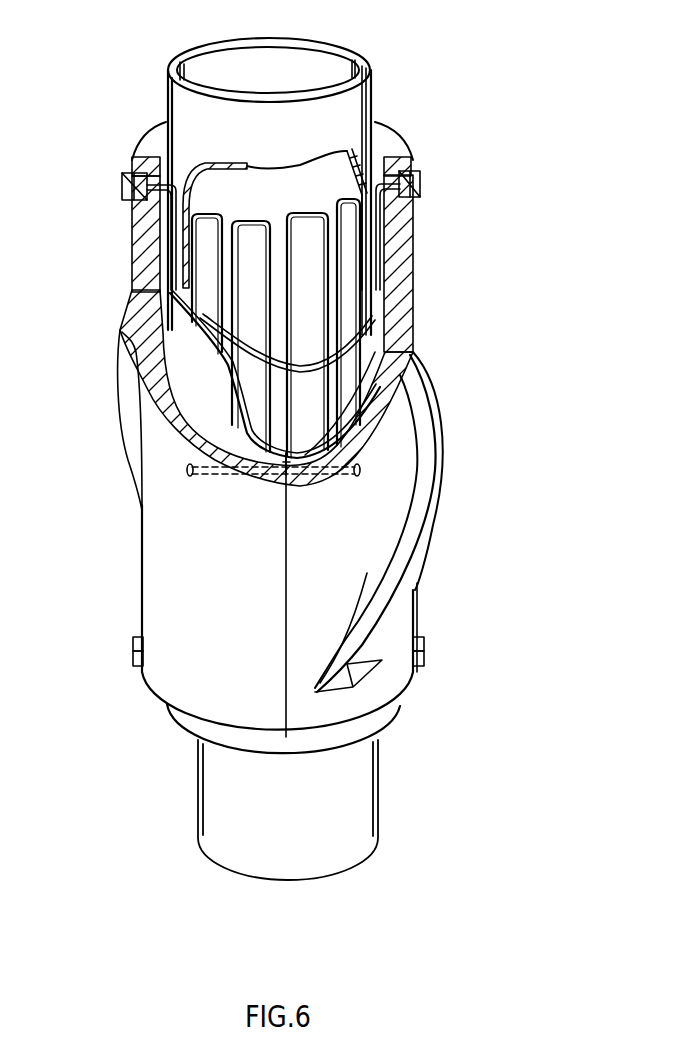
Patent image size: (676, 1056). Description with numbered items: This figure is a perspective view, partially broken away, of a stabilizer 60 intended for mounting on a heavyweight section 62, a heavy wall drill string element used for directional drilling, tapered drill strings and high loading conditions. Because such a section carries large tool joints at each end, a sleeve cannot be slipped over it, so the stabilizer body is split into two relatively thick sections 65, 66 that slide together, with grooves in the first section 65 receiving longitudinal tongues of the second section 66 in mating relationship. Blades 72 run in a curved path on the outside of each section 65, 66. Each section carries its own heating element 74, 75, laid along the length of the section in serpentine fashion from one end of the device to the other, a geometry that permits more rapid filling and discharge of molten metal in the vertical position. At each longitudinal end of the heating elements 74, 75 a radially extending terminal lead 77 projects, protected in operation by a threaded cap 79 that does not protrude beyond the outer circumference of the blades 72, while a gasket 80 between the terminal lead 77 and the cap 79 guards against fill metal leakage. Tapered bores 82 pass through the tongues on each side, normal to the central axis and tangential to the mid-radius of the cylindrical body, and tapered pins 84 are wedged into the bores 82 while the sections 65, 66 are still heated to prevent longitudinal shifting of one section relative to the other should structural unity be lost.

The stabilizer 60 is at (470, 527).
The heavyweight section 62 is at (374, 100).
The first section 65 is at (158, 598).
The second section 66 is at (410, 628).
The blades 72 is at (430, 470).
The heating element 74 is at (210, 246).
The heating element 75 is at (340, 267).
The terminal lead 77 is at (170, 190).
The threaded cap 79 is at (124, 186).
The gasket 80 is at (136, 166).
The tapered bores 82 is at (358, 462).
The tapered pins 84 is at (366, 470).